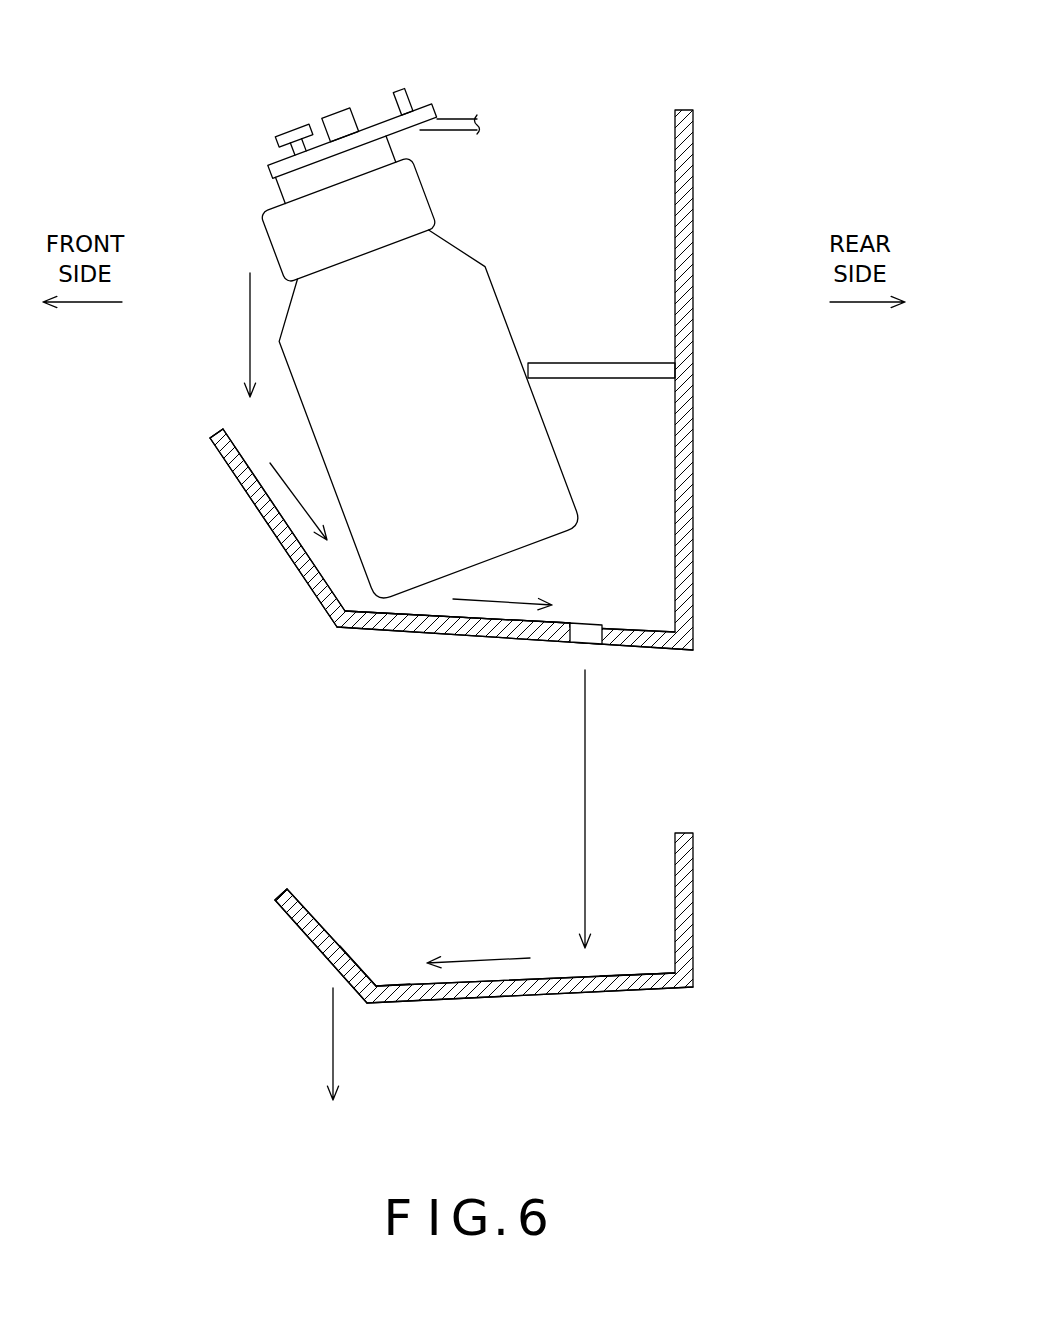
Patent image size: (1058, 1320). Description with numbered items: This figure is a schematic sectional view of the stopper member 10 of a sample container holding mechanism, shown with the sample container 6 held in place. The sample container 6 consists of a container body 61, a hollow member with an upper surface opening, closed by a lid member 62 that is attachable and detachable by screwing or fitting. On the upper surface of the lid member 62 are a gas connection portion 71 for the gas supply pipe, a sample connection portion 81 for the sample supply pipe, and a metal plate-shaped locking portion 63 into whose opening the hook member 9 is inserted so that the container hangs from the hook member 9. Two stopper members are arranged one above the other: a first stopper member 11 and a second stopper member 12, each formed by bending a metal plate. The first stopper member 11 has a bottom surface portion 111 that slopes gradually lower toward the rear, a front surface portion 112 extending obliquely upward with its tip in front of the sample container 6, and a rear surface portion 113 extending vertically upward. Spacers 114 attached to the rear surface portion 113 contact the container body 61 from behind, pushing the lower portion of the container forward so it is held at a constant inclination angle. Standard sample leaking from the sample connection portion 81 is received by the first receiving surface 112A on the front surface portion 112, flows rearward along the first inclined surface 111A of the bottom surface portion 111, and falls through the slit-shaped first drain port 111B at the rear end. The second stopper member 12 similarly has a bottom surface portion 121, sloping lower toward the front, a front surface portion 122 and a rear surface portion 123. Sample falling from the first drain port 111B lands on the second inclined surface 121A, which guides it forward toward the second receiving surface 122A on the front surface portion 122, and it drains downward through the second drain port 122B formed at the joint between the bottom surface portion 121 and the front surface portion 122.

The sample container 6 is at (502, 265).
The container body 61 is at (508, 330).
The lid member 62 is at (425, 188).
The locking portion 63 is at (382, 115).
The gas connection portion 71 is at (328, 107).
The sample connection portion 81 is at (274, 146).
The hook member 9 is at (411, 98).
The stopper member 10 is at (710, 499).
The first stopper member 11 is at (446, 415).
The second stopper member 12 is at (519, 933).
The bottom surface portion 111 is at (433, 640).
The first inclined surface 111A is at (560, 621).
The first drain port 111B is at (593, 643).
The front surface portion 112 is at (287, 551).
The first receiving surface 112A is at (237, 449).
The rear surface portion 113 is at (697, 184).
The spacer 114 is at (617, 380).
The bottom surface portion 121 is at (507, 997).
The second inclined surface 121A is at (648, 967).
The front surface portion 122 is at (310, 940).
The second receiving surface 122A is at (303, 898).
The second drain port 122B is at (360, 981).
The rear surface portion 123 is at (697, 967).